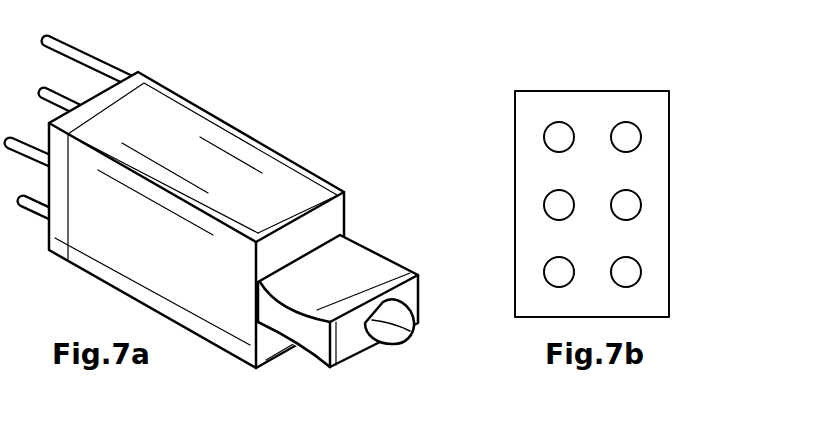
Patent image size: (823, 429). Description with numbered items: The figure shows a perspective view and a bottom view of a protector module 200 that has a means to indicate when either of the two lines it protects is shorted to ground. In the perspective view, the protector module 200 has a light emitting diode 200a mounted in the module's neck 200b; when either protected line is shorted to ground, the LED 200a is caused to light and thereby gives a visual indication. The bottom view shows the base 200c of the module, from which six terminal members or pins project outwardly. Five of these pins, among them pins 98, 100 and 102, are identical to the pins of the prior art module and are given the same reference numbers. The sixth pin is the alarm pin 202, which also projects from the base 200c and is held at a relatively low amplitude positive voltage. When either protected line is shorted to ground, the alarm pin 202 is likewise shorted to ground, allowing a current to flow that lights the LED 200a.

In FIG. 7a, the protector module 200 is at (228, 143).
In FIG. 7a, the light emitting diode (LED) 200a is at (392, 328).
In FIG. 7a, the neck 200b is at (348, 270).
In FIG. 7b, the base 200c is at (597, 105).
In FIG. 7b, the pin 98 is at (628, 137).
In FIG. 7b, the pin 100 is at (556, 137).
In FIG. 7b, the pin 102 is at (553, 203).
In FIG. 7b, the alarm pin 202 is at (627, 205).